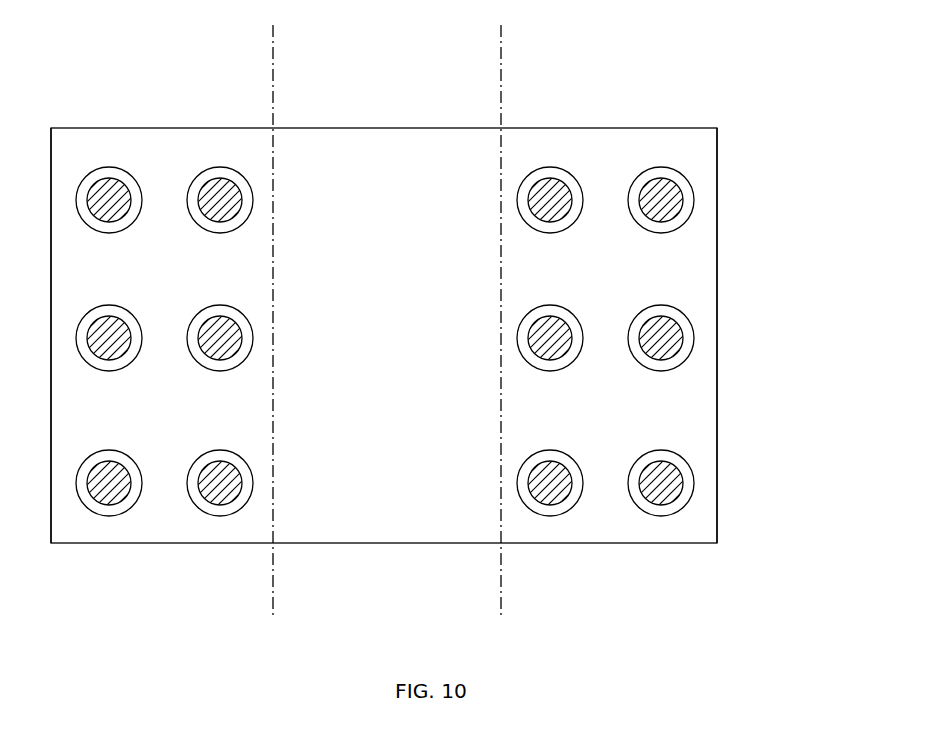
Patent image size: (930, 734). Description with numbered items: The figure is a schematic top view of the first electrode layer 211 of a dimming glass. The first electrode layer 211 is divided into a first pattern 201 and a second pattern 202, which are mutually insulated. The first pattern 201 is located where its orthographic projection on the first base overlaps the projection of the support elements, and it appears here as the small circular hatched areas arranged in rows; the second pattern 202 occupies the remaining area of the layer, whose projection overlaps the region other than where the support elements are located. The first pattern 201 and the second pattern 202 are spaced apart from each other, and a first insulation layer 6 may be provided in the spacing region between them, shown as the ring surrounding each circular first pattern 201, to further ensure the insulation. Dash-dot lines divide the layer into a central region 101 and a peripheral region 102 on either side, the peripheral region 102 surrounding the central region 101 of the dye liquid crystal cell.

The first electrode layer 211 is at (693, 143).
The second pattern 202 is at (692, 257).
The first insulation layer 6 is at (667, 308).
The first pattern 201 is at (680, 327).
The central region 101 is at (501, 565).
The peripheral region 102 is at (273, 593).